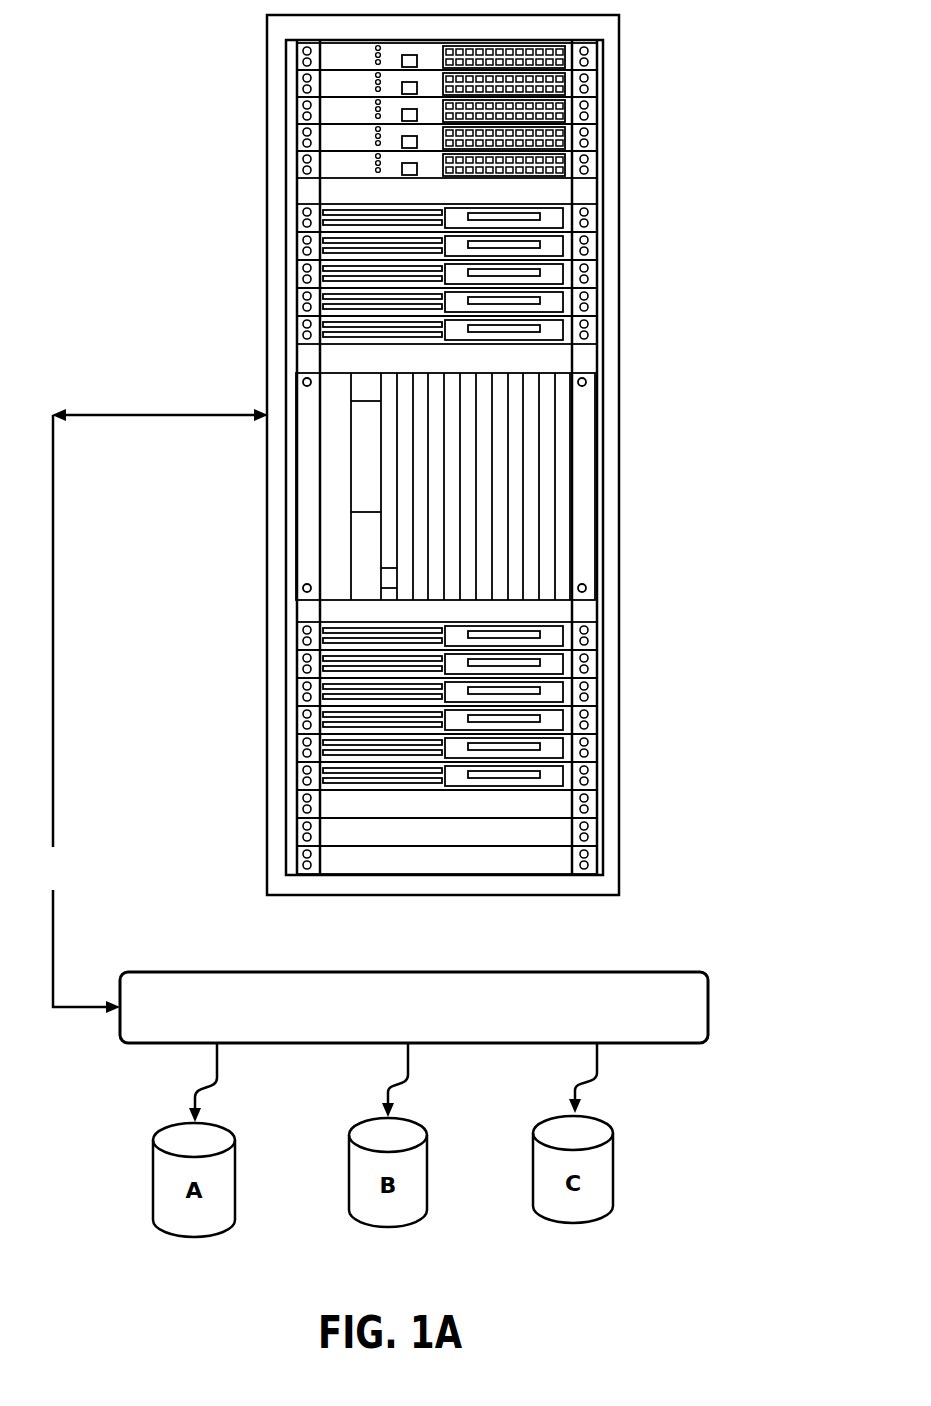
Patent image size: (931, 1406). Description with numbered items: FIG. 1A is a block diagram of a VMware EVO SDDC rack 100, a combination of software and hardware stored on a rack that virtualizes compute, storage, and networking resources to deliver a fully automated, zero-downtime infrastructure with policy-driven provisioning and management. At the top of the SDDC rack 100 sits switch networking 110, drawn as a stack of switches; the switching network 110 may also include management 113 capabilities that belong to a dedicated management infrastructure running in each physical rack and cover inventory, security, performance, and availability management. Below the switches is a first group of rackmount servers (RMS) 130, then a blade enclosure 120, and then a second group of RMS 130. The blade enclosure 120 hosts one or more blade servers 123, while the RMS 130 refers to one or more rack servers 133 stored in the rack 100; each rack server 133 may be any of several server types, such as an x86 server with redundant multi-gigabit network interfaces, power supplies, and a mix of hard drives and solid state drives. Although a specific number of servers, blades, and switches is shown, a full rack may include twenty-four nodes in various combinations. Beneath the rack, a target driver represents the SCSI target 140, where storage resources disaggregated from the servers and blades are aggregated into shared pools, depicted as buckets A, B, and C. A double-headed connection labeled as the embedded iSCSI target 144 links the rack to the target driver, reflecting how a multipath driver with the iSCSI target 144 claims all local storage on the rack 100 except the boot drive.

The SDDC rack 100 is at (115, 63).
The switch networking 110 is at (630, 177).
The management capabilities 113 is at (300, 275).
The blade enclosure 120 is at (491, 471).
The blade server 123 is at (333, 418).
The rackmount servers (RMS) 130 is at (464, 496).
The rack server 133 is at (287, 664).
The SCSI target 140 is at (725, 972).
The iSCSI target 144 is at (151, 711).